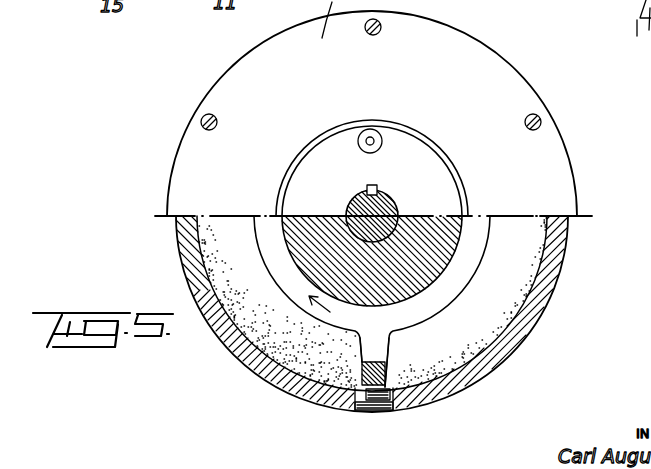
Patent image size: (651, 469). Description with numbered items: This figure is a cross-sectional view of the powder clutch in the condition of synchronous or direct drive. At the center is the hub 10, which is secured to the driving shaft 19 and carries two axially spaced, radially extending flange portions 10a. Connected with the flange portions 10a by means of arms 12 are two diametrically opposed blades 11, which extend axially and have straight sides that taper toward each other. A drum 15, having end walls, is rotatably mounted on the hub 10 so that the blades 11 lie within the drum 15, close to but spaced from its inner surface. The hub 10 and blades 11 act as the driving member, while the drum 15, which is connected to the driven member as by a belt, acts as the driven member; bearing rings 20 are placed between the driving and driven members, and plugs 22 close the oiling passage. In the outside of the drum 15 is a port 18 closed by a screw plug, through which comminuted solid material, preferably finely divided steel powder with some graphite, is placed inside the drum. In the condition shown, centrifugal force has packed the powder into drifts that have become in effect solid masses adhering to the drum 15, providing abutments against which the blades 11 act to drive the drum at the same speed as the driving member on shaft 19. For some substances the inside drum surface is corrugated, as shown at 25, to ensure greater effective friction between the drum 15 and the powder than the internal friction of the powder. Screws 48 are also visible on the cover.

The hub 10 is at (452, 257).
The flange portions 10a is at (440, 297).
The blades 11 is at (385, 368).
The arms 12 is at (377, 343).
The drum 15 is at (232, 343).
The port 18 is at (370, 412).
The shaft 19 is at (397, 189).
The bearing rings 20 is at (415, 133).
The plugs 22 is at (378, 150).
The corrugated inside drum surface 25 is at (500, 363).
The screws 48 is at (354, 65).